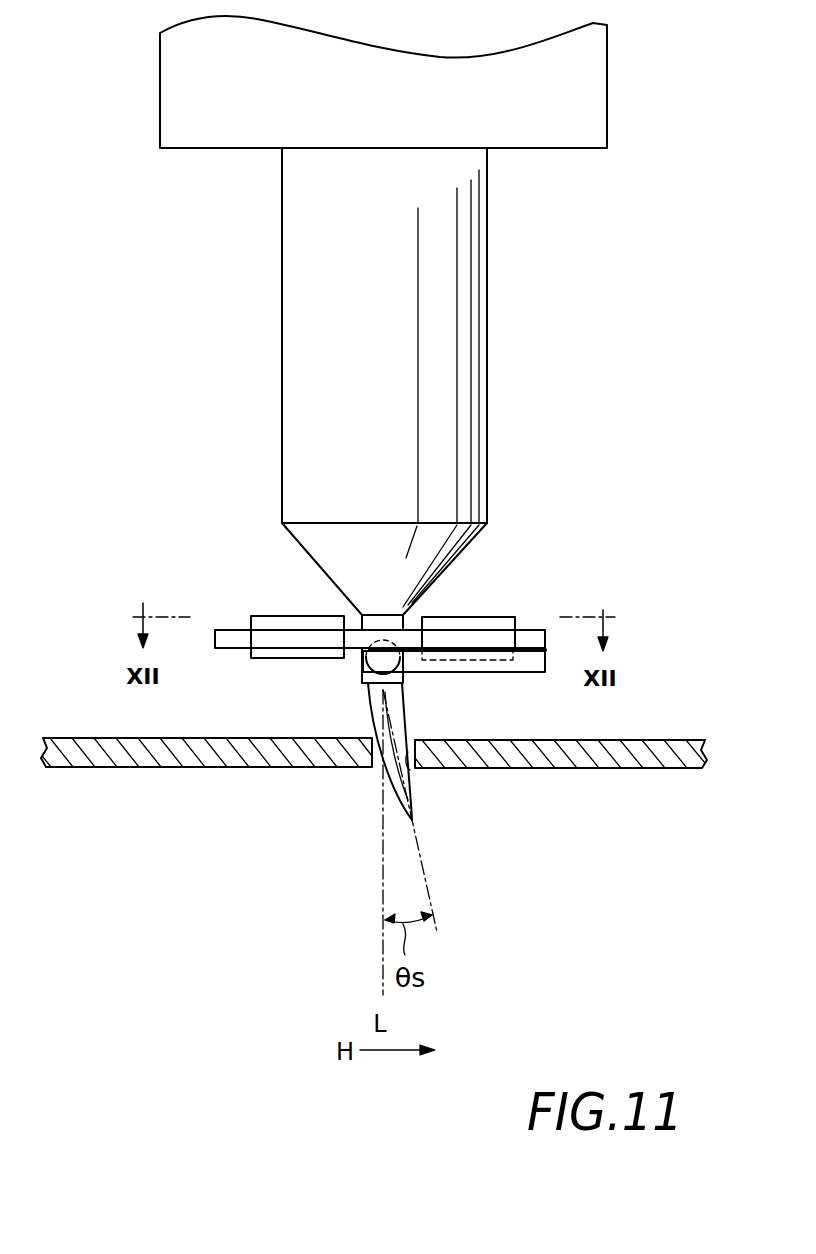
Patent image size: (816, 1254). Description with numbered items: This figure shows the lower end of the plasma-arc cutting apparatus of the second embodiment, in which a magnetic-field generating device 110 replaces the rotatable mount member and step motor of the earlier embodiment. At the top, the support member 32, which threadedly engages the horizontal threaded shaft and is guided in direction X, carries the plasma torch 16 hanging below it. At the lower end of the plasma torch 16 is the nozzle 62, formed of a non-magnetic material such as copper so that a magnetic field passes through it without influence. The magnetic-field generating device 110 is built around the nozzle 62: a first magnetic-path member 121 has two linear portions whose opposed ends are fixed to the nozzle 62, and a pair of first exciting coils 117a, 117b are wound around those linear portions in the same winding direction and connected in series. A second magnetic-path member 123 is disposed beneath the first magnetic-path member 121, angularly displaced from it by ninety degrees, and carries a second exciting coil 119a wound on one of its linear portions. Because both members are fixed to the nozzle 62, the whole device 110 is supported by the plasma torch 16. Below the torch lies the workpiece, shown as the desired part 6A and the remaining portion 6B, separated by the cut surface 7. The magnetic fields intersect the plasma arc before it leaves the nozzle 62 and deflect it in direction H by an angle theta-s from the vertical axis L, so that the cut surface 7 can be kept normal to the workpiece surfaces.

The support member 32 is at (457, 62).
The plasma torch 16 is at (487, 300).
The magnetic-field generating device 110 is at (603, 500).
The first exciting coil 117a is at (283, 616).
The first exciting coil 117b is at (484, 617).
The first magnetic-path member 121 is at (530, 630).
The second magnetic-path member 123 is at (530, 673).
The second exciting coil 119a is at (358, 659).
The nozzle 62 is at (403, 676).
The cut surface 7 is at (414, 778).
The left throat plate 6B is at (193, 768).
The desired part 6A is at (575, 769).